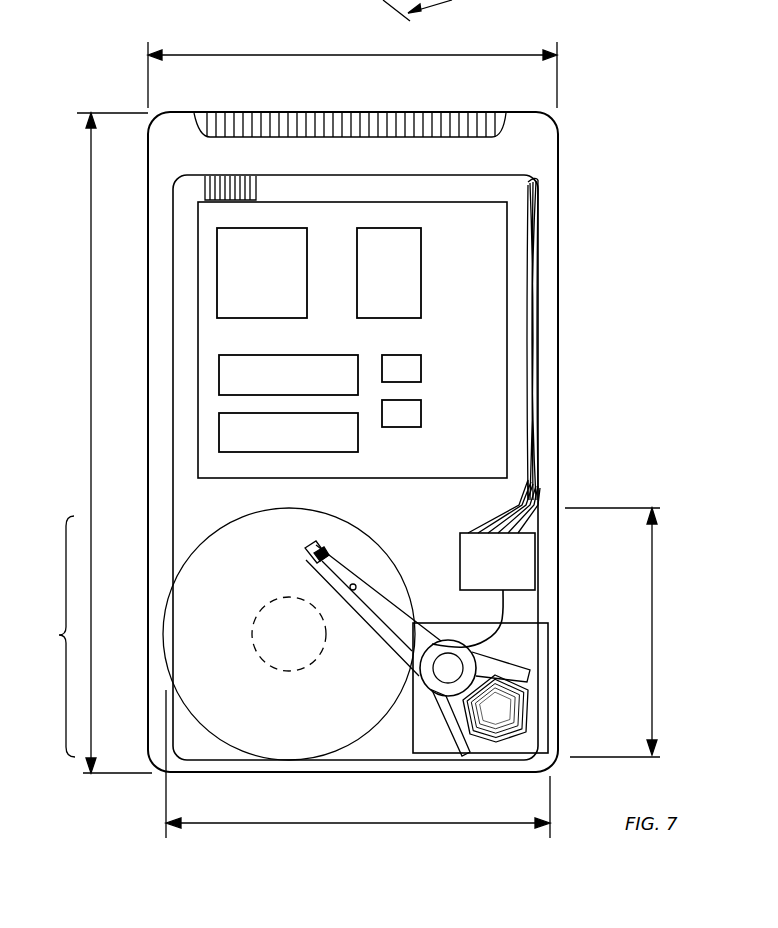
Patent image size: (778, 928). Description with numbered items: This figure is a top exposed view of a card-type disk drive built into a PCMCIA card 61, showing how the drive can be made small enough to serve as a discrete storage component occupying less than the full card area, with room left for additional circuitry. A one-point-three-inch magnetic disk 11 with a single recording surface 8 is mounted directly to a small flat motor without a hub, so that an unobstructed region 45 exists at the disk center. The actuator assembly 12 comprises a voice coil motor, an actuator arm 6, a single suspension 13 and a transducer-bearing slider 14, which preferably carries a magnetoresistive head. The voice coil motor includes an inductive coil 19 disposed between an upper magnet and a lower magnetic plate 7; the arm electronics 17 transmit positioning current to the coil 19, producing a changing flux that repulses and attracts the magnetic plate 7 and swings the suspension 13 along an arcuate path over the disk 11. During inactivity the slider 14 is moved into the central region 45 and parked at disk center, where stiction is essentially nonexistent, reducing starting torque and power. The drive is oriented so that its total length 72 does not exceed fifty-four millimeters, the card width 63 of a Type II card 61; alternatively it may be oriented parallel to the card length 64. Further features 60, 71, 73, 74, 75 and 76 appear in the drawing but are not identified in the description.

The actuator arm 6 is at (447, 712).
The lower magnetic plate 7 is at (480, 688).
The disk surface 8 is at (269, 625).
The disk 11 is at (345, 525).
The actuator assembly 12 is at (420, 703).
The suspension 13 is at (383, 638).
The transducer-bearing slider 14 is at (323, 565).
The arm electronics 17 is at (460, 562).
The inductive coil 19 is at (520, 717).
The unobstructed region 45 is at (275, 682).
The vent grille 60 is at (400, 112).
The PCMCIA card 61 is at (560, 309).
The card width 63 is at (258, 54).
The card length 64 is at (98, 443).
The integrated circuit chips 71 is at (385, 240).
The drive total length 72 is at (316, 822).
The height dimension 73 is at (654, 628).
The disk region height 74 is at (52, 636).
The flex cable 75 is at (458, 511).
The cable 76 is at (512, 391).